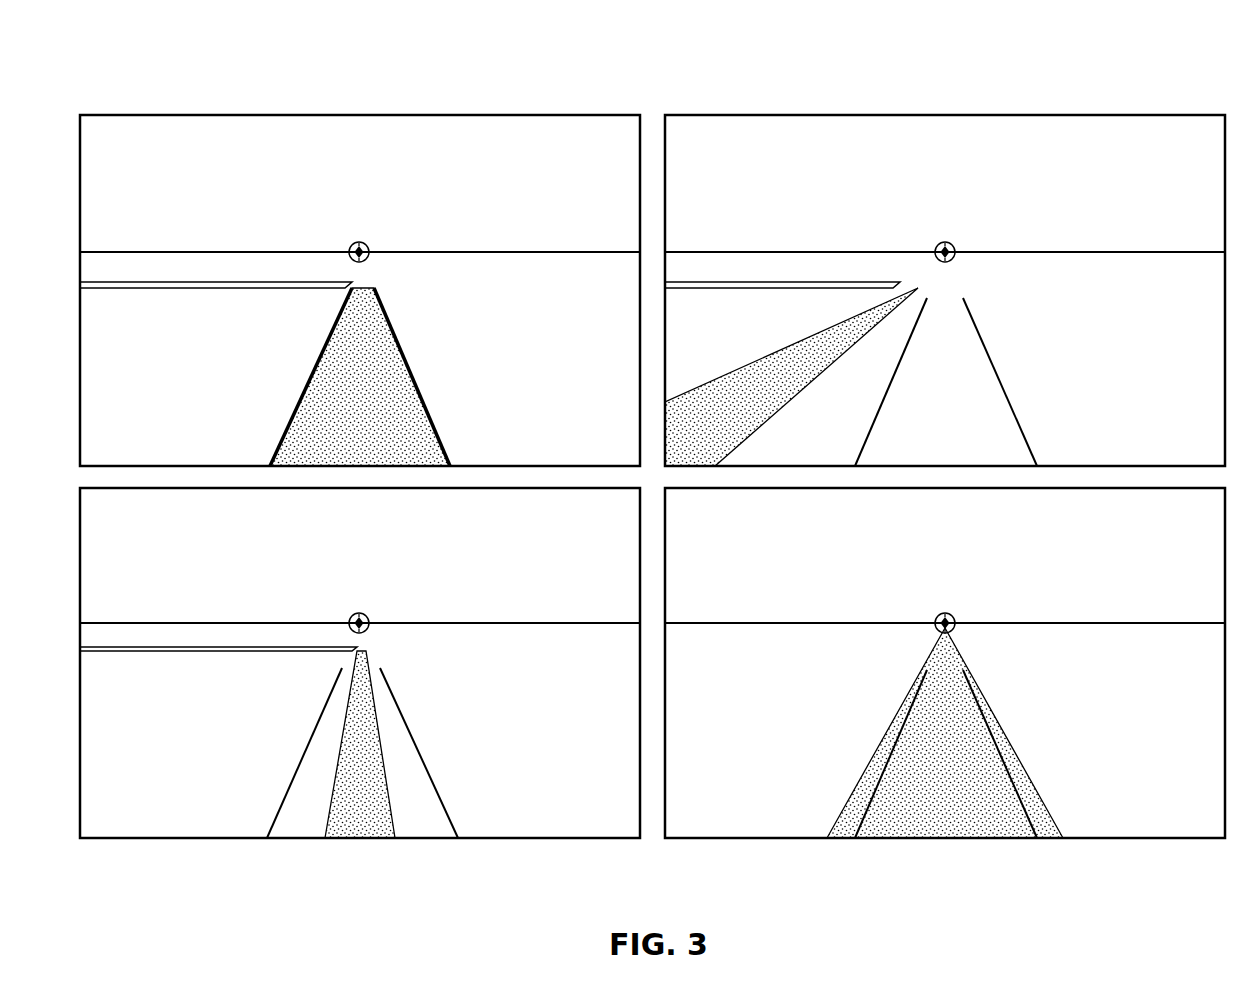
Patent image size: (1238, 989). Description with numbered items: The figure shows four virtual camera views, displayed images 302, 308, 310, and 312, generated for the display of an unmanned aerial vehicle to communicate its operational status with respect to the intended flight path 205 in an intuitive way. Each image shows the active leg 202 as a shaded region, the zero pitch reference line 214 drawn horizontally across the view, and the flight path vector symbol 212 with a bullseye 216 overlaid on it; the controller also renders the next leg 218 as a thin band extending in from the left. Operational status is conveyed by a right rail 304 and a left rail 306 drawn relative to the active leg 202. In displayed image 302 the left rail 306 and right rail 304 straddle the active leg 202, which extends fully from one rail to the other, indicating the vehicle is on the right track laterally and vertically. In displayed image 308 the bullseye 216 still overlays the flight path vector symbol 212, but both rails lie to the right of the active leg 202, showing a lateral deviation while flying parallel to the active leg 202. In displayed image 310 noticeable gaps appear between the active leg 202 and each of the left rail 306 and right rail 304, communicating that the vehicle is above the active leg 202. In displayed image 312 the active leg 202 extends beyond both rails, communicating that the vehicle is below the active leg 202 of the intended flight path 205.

The active leg 202 is at (382, 457).
The intended flight path 205 is at (352, 332).
The flight path vector symbol 212 is at (360, 242).
The zero pitch reference line 214 is at (495, 251).
The bullseye 216 is at (652, 623).
The next leg 218 is at (188, 290).
The displayed image 302 is at (150, 114).
The right rail 304 is at (418, 380).
The left rail 306 is at (305, 380).
The displayed image 308 is at (736, 114).
The displayed image 310 is at (149, 840).
The displayed image 312 is at (736, 840).